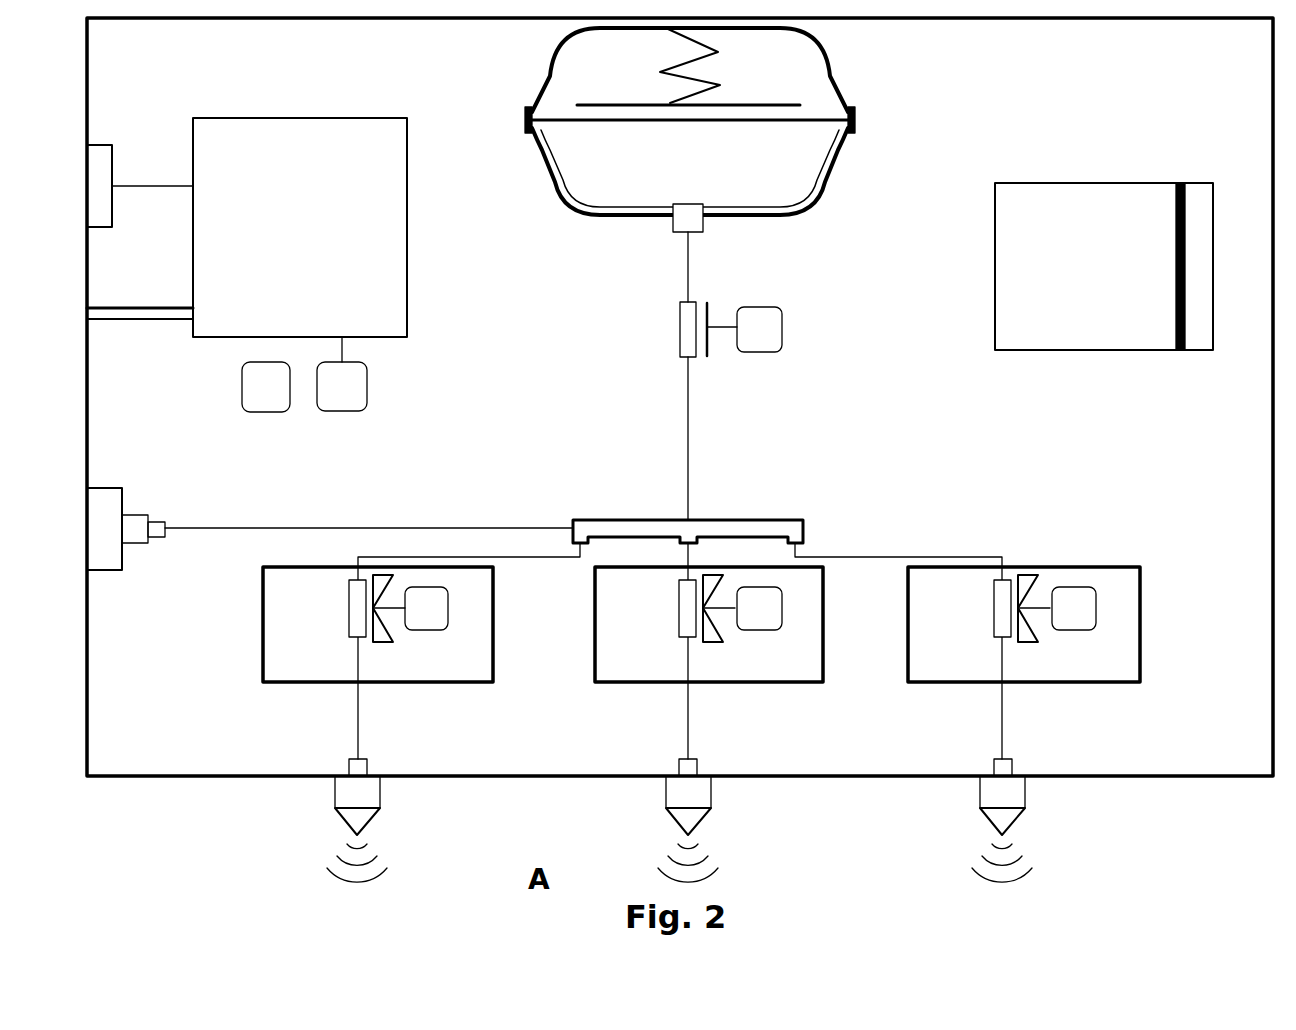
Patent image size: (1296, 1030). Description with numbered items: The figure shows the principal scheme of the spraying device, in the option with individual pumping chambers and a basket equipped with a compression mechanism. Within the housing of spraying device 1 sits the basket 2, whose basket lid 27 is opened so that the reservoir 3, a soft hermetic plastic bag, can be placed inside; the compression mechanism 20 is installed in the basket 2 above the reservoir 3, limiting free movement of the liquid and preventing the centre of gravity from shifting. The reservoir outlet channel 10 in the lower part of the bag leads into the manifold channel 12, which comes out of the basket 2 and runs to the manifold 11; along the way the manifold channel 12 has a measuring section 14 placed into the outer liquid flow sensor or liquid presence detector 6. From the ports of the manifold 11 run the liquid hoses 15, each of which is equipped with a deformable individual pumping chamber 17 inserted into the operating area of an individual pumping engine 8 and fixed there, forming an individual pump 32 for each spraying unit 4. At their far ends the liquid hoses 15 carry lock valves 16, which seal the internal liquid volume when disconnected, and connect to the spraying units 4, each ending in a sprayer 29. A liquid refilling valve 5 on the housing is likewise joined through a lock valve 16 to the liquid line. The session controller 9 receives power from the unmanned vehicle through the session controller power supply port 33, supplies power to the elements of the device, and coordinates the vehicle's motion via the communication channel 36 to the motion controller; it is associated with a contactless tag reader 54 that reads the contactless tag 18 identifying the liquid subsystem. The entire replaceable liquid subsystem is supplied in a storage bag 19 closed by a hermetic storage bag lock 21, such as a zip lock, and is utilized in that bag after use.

The housing of spraying device 1 is at (86, 778).
The basket 2 is at (590, 218).
The reservoir 3 is at (686, 161).
The spraying unit 4 is at (335, 797).
The liquid refilling valve 5 is at (122, 488).
The liquid flow sensor or liquid presence detector 6 is at (744, 329).
The individual pumping engine 8 is at (750, 608).
The session controller 9 is at (300, 227).
The reservoir outlet channel 10 is at (673, 232).
The manifold 11 is at (803, 520).
The manifold channel 12 is at (688, 382).
The measuring section of manifold channel 14 is at (693, 302).
The liquid hoses 15 is at (385, 558).
The lock valves 16 is at (165, 540).
The individual pumping chamber 17 is at (365, 637).
The contactless tag 18 is at (266, 387).
The storage bag 19 is at (1104, 266).
The compression mechanism 20 is at (668, 100).
The storage bag lock 21 is at (1181, 183).
The basket lid 27 is at (526, 108).
The sprayer 29 is at (345, 823).
The individual pump 32 is at (701, 624).
The session controller power supply port 33 is at (112, 145).
The communication channel 36 is at (115, 306).
The contactless tag reader 54 is at (342, 374).